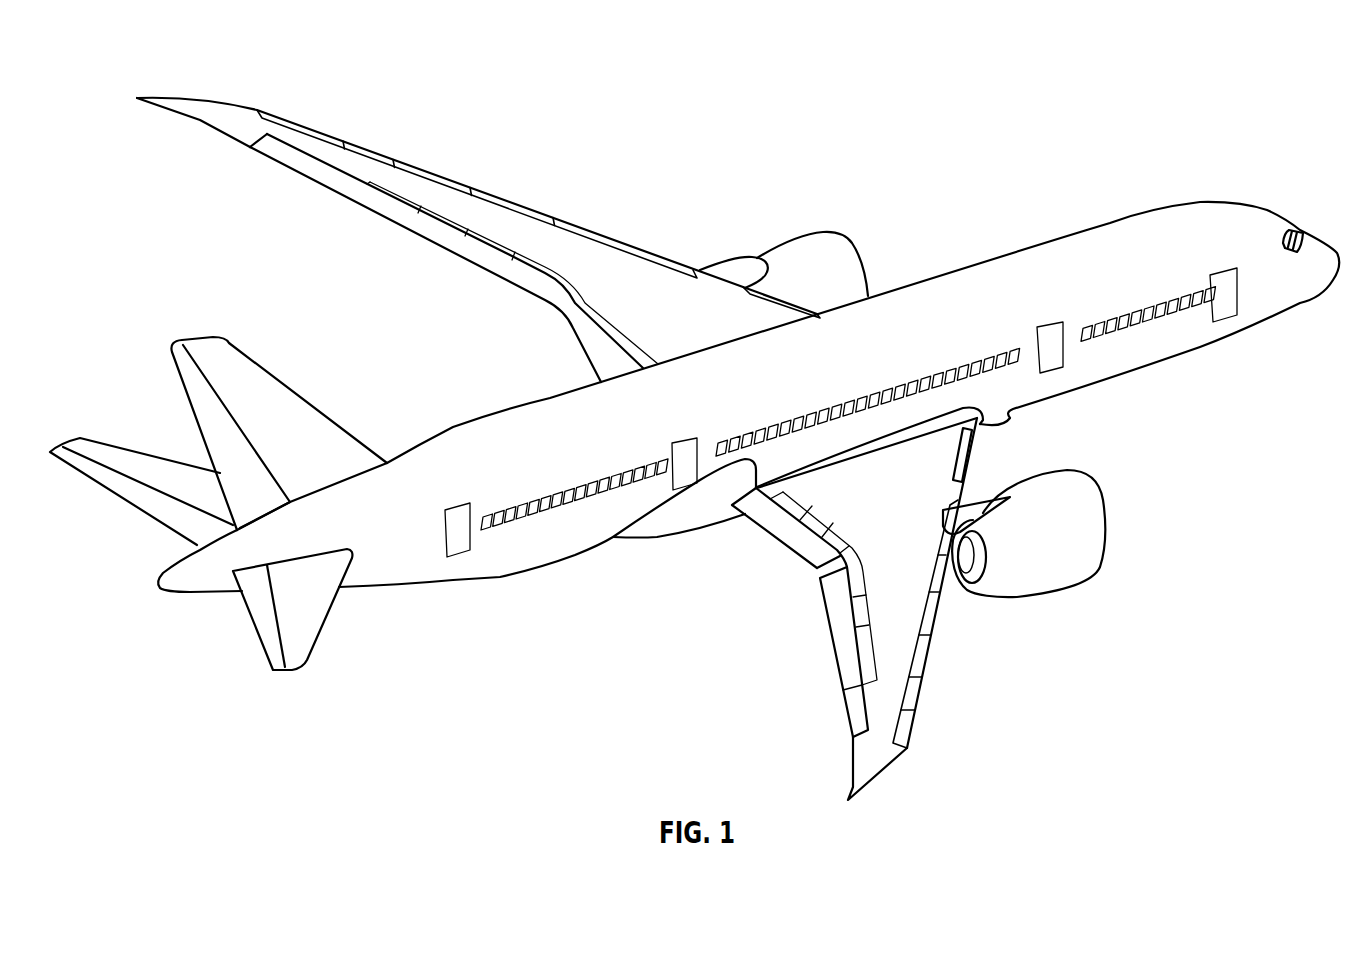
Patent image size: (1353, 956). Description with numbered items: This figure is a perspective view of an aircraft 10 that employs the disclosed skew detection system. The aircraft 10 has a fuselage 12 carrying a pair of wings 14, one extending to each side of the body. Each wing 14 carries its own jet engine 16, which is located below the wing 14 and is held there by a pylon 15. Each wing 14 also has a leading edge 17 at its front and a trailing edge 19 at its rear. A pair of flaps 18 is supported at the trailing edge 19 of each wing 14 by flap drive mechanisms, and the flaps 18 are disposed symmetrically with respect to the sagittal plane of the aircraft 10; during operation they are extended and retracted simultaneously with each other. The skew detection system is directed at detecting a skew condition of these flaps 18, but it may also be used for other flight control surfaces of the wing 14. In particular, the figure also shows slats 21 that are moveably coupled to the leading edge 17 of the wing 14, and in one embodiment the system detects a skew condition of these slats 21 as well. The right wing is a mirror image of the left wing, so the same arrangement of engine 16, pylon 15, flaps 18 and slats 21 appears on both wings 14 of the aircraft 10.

The aircraft 10 is at (1218, 71).
The fuselage 12 is at (1138, 227).
The wing 14 is at (507, 220).
The pylon 15 is at (743, 270).
The jet engine 16 is at (840, 250).
The leading edge 17 is at (481, 170).
The flap 18 is at (568, 325).
The trailing edge 19 is at (333, 153).
The slat 21 is at (300, 123).